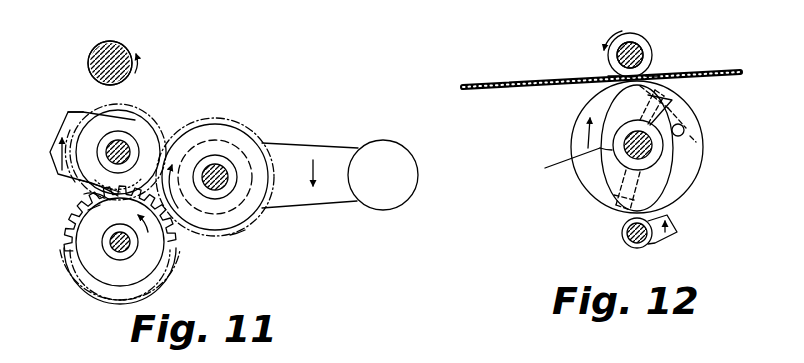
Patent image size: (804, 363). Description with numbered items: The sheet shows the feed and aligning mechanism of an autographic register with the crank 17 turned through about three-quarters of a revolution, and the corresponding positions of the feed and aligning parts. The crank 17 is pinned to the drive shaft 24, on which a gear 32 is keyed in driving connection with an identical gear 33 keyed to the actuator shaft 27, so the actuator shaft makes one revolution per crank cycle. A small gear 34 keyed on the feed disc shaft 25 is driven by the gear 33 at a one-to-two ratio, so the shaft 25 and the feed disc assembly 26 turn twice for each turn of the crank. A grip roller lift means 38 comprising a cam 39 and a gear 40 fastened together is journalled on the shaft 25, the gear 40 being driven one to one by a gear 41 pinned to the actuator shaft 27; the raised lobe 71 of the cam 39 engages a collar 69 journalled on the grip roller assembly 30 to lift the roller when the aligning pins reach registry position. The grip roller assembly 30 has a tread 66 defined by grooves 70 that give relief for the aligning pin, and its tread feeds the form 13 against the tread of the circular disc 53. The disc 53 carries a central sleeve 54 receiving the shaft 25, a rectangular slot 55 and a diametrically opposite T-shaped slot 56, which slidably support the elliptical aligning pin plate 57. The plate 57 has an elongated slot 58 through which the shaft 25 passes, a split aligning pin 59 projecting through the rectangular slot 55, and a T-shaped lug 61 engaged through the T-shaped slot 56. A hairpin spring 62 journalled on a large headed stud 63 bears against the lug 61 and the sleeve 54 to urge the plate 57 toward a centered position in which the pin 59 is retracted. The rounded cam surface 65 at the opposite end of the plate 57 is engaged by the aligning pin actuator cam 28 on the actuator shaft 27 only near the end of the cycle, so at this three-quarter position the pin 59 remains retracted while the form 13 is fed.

In FIG. 12, the manifolding form 13 is at (521, 82).
In FIG. 11, the crank 17 is at (338, 200).
In FIG. 11, the drive shaft 24 is at (216, 184).
In FIG. 11, the feed disc shaft 25 is at (121, 150).
In FIG. 12, the feed disc shaft 25 is at (664, 160).
In FIG. 12, the feed disc assembly 26 is at (566, 134).
In FIG. 11, the actuator shaft 27 is at (118, 252).
In FIG. 12, the actuator shaft 27 is at (626, 242).
In FIG. 12, the aligning pin actuator cam 28 is at (662, 242).
In FIG. 11, the grip roller assembly 30 is at (90, 70).
In FIG. 12, the grip roller assembly 30 is at (650, 32).
In FIG. 11, the gear 32 is at (232, 233).
In FIG. 11, the gear 33 is at (176, 237).
In FIG. 11, the small gear 34 is at (80, 182).
In FIG. 11, the grip roller lift means 38 is at (82, 112).
In FIG. 11, the cam 39 is at (68, 113).
In FIG. 11, the gear 40 is at (95, 195).
In FIG. 11, the gear 41 is at (88, 210).
In FIG. 12, the circular disc 53 is at (672, 104).
In FIG. 12, the sleeve 54 is at (606, 156).
In FIG. 12, the rectangular slot 55 is at (642, 182).
In FIG. 12, the T-shaped slot 56 is at (684, 120).
In FIG. 12, the aligning pin plate 57 is at (558, 164).
In FIG. 12, the elongated slot 58 is at (662, 148).
In FIG. 12, the split aligning pin 59 is at (636, 204).
In FIG. 12, the T-shaped lug 61 is at (685, 131).
In FIG. 12, the hairpin spring 62 is at (636, 104).
In FIG. 12, the large headed stud 63 is at (690, 138).
In FIG. 12, the cam surface 65 is at (665, 76).
In FIG. 12, the tread 66 is at (608, 76).
In FIG. 11, the collar 69 is at (116, 42).
In FIG. 12, the groove 70 is at (648, 56).
In FIG. 11, the raised lobe 71 is at (50, 152).